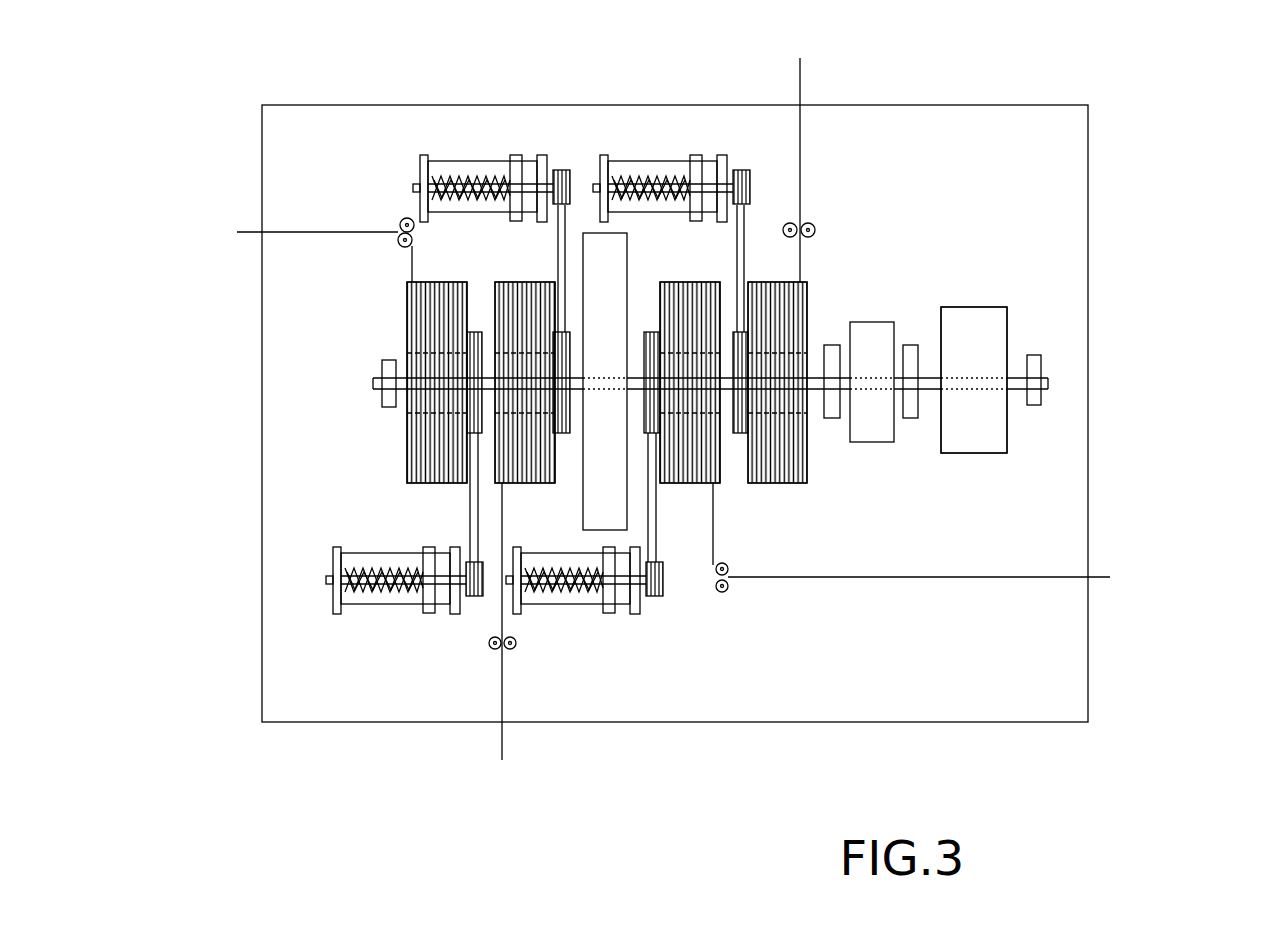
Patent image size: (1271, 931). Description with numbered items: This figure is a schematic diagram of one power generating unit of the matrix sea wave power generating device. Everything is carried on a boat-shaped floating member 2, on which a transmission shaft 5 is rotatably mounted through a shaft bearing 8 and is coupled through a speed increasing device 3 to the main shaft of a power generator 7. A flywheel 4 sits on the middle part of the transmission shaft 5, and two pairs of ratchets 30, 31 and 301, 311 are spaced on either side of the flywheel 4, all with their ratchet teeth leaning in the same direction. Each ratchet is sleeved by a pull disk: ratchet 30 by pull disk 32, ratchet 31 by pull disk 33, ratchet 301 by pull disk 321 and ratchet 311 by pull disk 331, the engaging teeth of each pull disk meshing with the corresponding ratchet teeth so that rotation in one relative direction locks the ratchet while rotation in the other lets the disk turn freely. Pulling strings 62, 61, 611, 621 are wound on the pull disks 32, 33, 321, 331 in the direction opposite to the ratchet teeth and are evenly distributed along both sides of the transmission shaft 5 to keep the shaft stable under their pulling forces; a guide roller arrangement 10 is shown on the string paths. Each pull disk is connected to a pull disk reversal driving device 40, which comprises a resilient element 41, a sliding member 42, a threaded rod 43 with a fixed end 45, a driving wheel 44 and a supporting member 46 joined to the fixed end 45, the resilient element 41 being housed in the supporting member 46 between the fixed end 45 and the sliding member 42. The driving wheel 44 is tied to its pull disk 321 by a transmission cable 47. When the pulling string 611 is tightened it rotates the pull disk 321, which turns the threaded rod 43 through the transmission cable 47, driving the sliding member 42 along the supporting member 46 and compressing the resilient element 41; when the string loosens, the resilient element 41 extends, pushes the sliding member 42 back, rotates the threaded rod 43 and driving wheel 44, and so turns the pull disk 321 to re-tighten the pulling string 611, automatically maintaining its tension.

The floating member 2 is at (976, 105).
The speed increasing device 3 is at (873, 442).
The flywheel 4 is at (617, 512).
The transmission shaft 5 is at (1043, 367).
The power generator 7 is at (978, 322).
The shaft bearing 8 is at (1008, 430).
The guide rollers 10 is at (728, 593).
The ratchet 30 is at (780, 363).
The ratchet 31 is at (672, 367).
The pull disk 32 is at (790, 455).
The pull disk 33 is at (705, 458).
The ratchet 301 is at (428, 380).
The ratchet 311 is at (513, 370).
The pull disk 321 is at (433, 440).
The pull disk 331 is at (533, 302).
The pull disk reversal driving device 40 is at (326, 685).
The resilient element 41 is at (357, 603).
The sliding member 42 is at (423, 607).
The threaded rod 43 is at (327, 580).
The driving wheel 44 is at (470, 600).
The fixed end 45 is at (333, 550).
The supporting member 46 is at (378, 603).
The transmission cable 47 is at (473, 513).
The pulling string 61 is at (870, 578).
The pulling string 62 is at (802, 178).
The pulling string 611 is at (318, 232).
The pulling string 621 is at (505, 688).